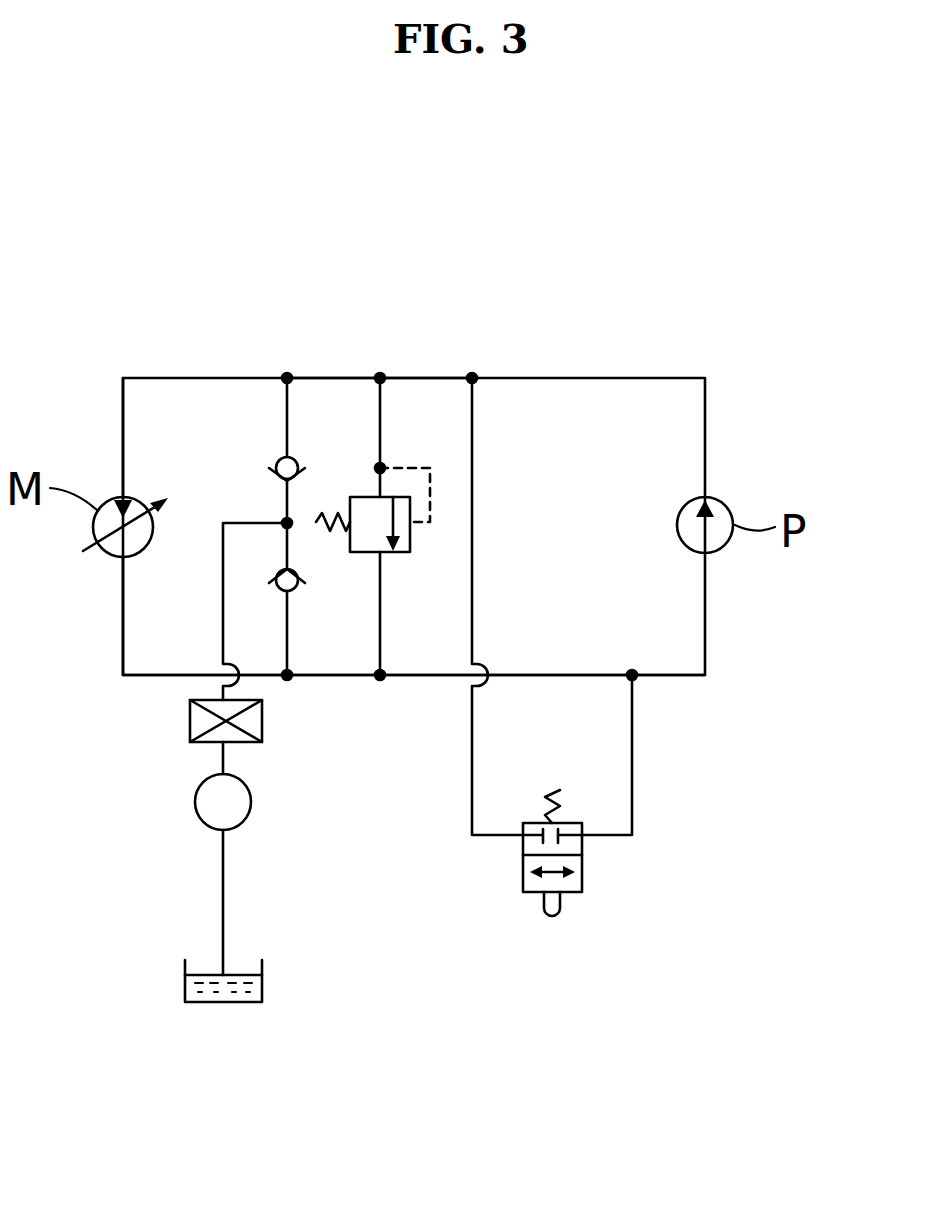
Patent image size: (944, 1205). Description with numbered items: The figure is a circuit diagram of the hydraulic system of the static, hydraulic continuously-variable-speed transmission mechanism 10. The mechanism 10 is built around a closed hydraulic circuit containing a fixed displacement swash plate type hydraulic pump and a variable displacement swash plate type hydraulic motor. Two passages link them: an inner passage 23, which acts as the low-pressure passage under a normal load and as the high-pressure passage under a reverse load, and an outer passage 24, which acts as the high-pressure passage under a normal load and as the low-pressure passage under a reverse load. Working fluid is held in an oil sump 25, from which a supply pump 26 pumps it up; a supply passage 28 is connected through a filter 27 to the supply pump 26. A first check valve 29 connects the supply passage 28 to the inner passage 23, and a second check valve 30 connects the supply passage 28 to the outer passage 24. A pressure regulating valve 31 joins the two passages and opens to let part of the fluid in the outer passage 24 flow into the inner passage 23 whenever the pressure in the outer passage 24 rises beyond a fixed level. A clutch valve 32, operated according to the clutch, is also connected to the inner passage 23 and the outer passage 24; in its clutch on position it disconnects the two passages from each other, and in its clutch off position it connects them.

The static, hydraulic continuously-variable-speed transmission mechanism 10 is at (609, 368).
The inner passage 23 is at (340, 677).
The outer passage 24 is at (420, 376).
The oil sump 25 is at (185, 985).
The supply pump 26 is at (195, 812).
The filter 27 is at (200, 729).
The supply passage 28 is at (223, 621).
The first check valve 29 is at (293, 592).
The second check valve 30 is at (278, 459).
The pressure regulating valve 31 is at (358, 492).
The clutch valve 32 is at (523, 868).